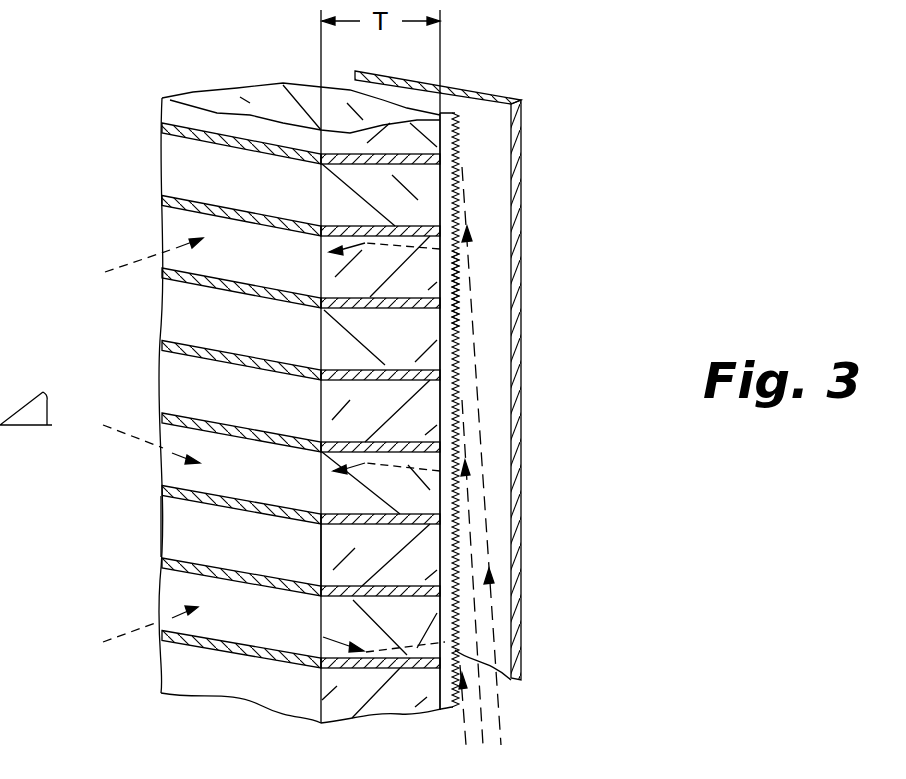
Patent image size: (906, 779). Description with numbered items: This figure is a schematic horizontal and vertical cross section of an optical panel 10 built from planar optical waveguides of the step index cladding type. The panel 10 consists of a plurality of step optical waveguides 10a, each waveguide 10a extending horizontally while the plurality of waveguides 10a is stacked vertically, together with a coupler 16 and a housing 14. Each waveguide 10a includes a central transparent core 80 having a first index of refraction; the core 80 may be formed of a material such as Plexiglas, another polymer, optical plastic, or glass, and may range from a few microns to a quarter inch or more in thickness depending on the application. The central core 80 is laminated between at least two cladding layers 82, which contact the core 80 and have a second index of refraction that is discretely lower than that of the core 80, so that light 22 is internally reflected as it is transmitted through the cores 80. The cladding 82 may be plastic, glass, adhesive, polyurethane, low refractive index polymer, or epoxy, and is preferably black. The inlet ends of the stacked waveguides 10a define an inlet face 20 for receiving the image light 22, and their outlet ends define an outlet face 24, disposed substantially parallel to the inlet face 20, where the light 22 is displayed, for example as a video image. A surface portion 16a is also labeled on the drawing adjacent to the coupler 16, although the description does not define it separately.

The optical panel 10 is at (124, 150).
The optical waveguide 10a is at (432, 566).
The housing 14 is at (521, 454).
The coupler 16 is at (468, 160).
The roughened surface portion 16a is at (455, 288).
The inlet face 20 is at (456, 407).
The image light 22 is at (500, 713).
The outlet face 24 is at (175, 313).
The central transparent core 80 is at (166, 527).
The cladding layer 82 is at (160, 489).